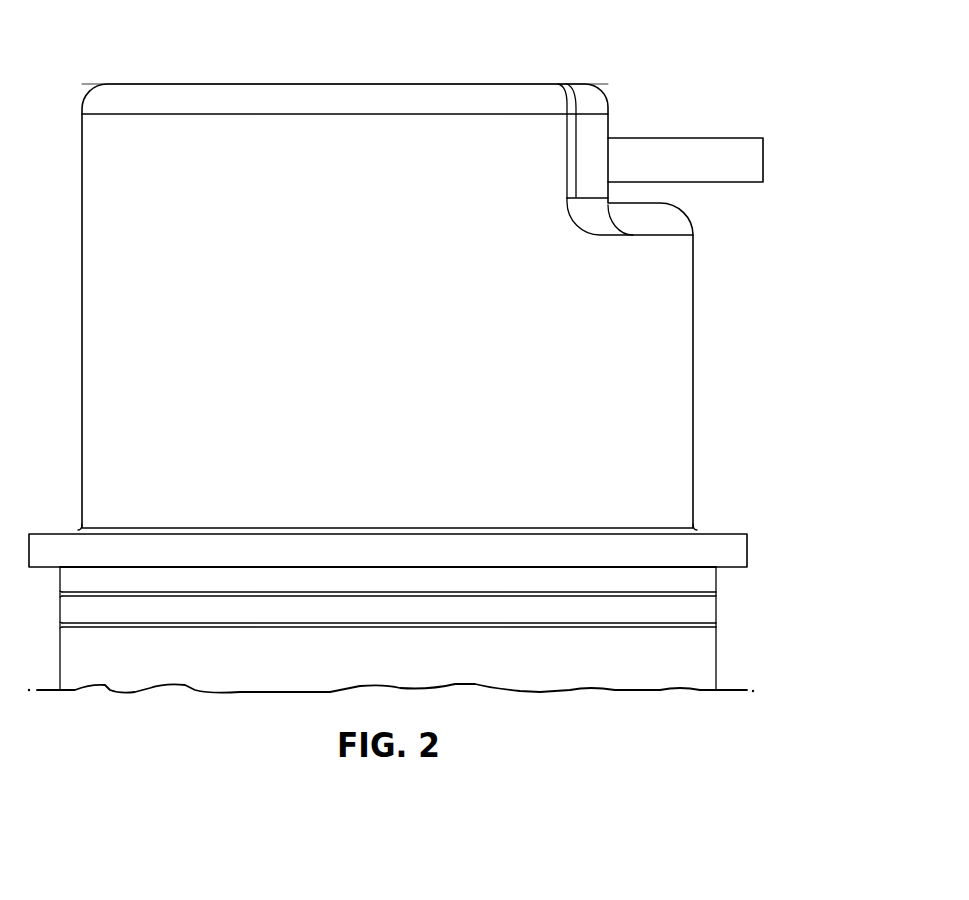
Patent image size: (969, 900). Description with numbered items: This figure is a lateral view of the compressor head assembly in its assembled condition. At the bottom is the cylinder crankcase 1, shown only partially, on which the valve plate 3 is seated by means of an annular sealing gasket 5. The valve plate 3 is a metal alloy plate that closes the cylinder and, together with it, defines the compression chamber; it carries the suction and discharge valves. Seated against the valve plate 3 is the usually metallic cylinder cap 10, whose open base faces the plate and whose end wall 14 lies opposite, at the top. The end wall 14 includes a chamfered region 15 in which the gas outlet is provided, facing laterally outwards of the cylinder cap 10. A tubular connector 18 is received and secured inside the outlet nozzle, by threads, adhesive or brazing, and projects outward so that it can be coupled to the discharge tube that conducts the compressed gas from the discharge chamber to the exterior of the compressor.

The cylinder crankcase 1 is at (584, 656).
The valve plate 3 is at (578, 581).
The annular sealing gasket 5 is at (347, 612).
The cylinder cap 10 is at (708, 472).
The end wall 14 is at (295, 84).
The chamfered region 15 is at (637, 190).
The tubular connector 18 is at (703, 137).